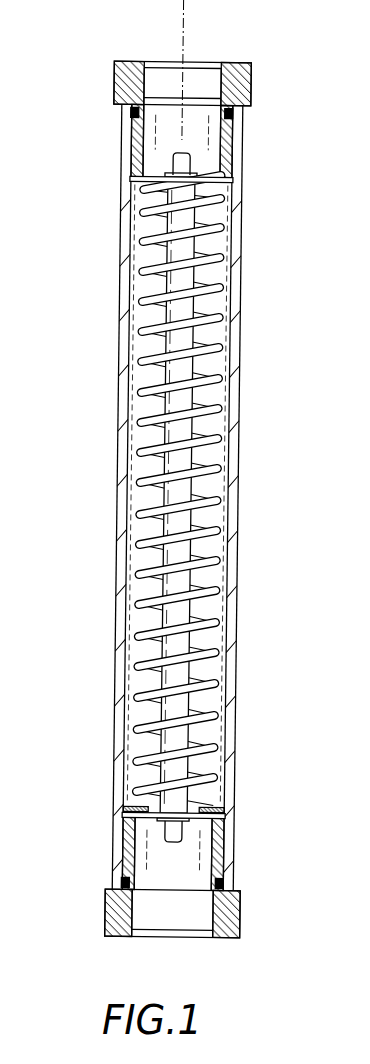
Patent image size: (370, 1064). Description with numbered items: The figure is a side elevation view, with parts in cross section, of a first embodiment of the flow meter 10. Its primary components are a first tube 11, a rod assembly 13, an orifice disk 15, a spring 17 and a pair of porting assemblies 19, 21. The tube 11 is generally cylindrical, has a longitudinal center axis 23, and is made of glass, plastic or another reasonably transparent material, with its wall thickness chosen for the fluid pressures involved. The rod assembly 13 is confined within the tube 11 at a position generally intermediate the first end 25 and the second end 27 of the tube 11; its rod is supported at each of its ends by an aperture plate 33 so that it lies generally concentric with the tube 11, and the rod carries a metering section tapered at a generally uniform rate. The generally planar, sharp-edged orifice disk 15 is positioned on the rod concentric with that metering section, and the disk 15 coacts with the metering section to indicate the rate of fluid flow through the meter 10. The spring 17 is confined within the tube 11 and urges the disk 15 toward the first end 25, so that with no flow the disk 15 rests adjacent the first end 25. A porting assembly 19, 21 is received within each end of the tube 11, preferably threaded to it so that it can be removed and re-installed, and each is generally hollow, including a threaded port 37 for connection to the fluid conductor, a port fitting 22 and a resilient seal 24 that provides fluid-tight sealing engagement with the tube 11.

The flow meter 10 is at (178, 492).
The first tube 11 is at (117, 333).
The rod assembly 13 is at (180, 458).
The orifice disk 15 is at (228, 805).
The spring 17 is at (213, 498).
The porting assembly 19 is at (246, 905).
The porting assembly 21 is at (246, 80).
The port fitting 22 is at (114, 85).
The longitudinal center axis 23 is at (181, 14).
The resilient seal 24 is at (229, 113).
The first end 25 is at (234, 940).
The second end 27 is at (241, 64).
The aperture plate 33 is at (231, 181).
The threaded port 37 is at (140, 90).